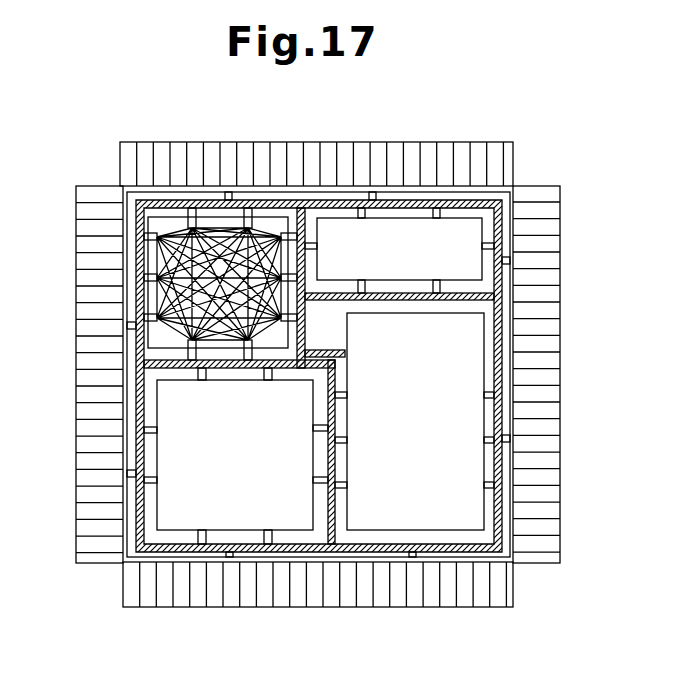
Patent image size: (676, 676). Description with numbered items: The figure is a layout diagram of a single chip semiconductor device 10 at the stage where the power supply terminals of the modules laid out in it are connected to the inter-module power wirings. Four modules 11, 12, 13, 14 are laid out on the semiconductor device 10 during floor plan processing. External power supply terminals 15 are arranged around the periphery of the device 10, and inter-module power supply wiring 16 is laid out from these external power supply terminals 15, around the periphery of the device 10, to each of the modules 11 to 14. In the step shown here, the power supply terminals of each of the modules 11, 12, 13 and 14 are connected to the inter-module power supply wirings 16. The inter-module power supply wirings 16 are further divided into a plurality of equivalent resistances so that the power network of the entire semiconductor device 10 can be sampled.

The semiconductor device 10 is at (505, 142).
The module 11 is at (160, 224).
The module 12 is at (163, 515).
The module 13 is at (455, 505).
The module 14 is at (470, 234).
The external power supply terminals 15 is at (374, 142).
The inter-module power supply wiring 16 is at (484, 200).